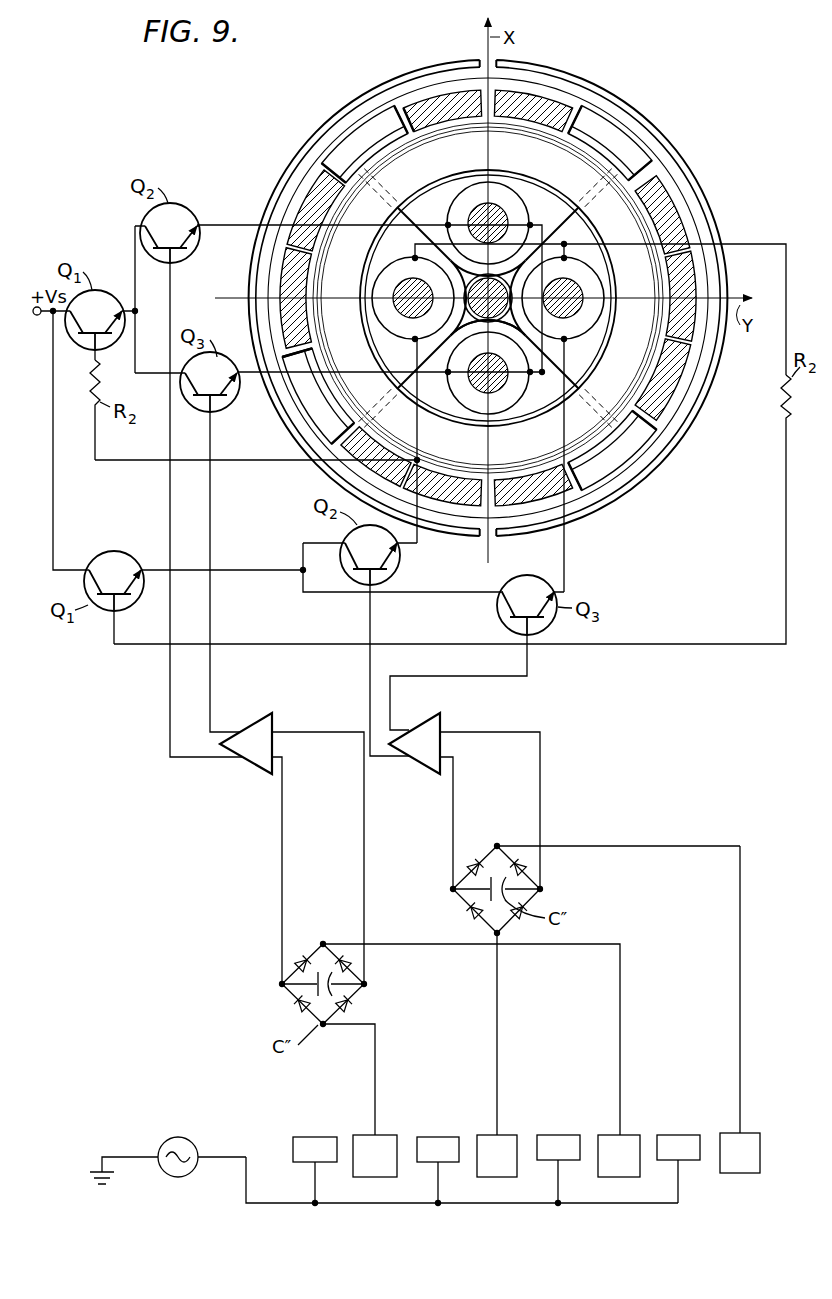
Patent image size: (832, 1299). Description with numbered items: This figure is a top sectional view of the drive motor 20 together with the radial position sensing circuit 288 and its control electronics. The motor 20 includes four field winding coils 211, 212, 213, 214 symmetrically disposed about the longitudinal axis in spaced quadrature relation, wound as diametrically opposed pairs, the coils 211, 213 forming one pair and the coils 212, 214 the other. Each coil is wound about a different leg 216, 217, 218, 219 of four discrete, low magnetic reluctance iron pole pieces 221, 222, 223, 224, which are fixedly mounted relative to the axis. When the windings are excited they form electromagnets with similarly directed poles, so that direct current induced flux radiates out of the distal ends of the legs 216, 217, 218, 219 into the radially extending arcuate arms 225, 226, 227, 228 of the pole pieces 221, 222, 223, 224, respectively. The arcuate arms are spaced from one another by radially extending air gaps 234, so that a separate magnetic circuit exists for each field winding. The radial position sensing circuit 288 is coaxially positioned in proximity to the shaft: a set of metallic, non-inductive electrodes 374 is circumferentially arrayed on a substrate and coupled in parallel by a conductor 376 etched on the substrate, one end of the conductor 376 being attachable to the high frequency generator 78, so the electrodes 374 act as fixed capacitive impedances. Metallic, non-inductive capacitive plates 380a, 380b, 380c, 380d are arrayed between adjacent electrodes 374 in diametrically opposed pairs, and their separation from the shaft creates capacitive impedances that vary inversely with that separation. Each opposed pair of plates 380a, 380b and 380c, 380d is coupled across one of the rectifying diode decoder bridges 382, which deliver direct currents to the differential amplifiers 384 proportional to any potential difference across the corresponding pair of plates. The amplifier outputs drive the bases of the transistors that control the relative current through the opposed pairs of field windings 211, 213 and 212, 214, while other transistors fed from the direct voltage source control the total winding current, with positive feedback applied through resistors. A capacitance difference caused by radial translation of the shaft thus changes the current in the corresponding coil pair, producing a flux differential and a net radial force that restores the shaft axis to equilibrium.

The drive motor 20 is at (650, 92).
The field winding coil 211 is at (390, 344).
The field winding coil 212 is at (477, 183).
The field winding coil 213 is at (600, 282).
The field winding coil 214 is at (510, 405).
The leg 216 is at (374, 316).
The leg 217 is at (456, 206).
The leg 218 is at (598, 313).
The leg 219 is at (437, 428).
The pole piece 221 is at (405, 249).
The pole piece 222 is at (540, 203).
The pole piece 223 is at (572, 238).
The pole piece 224 is at (473, 417).
The arcuate arm 225 is at (350, 388).
The arcuate arm 226 is at (407, 122).
The arcuate arm 227 is at (717, 224).
The arcuate arm 228 is at (638, 480).
The air gap 234 is at (340, 120).
The radial position sensing circuit 288 is at (552, 330).
The electrode 374 is at (313, 1136).
The conductor 376 is at (515, 1203).
The capacitive plate 380a is at (505, 1177).
The capacitive plate 380b is at (755, 1173).
The capacitive plate 380c is at (383, 1177).
The capacitive plate 380d is at (627, 1177).
The diode decoder bridge 382 is at (452, 872).
The differential amplifier 384 is at (268, 772).
The high frequency generator 78 is at (182, 1177).